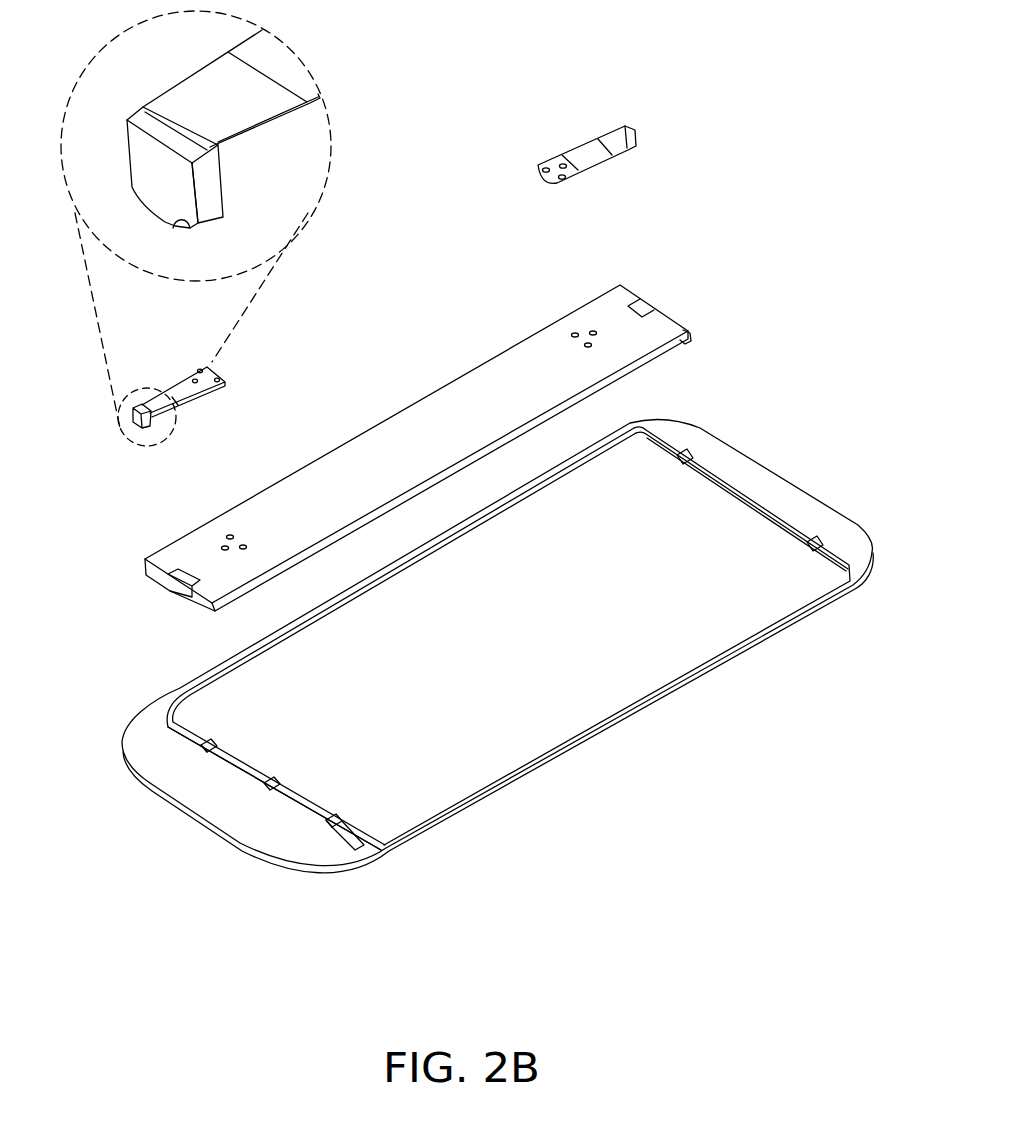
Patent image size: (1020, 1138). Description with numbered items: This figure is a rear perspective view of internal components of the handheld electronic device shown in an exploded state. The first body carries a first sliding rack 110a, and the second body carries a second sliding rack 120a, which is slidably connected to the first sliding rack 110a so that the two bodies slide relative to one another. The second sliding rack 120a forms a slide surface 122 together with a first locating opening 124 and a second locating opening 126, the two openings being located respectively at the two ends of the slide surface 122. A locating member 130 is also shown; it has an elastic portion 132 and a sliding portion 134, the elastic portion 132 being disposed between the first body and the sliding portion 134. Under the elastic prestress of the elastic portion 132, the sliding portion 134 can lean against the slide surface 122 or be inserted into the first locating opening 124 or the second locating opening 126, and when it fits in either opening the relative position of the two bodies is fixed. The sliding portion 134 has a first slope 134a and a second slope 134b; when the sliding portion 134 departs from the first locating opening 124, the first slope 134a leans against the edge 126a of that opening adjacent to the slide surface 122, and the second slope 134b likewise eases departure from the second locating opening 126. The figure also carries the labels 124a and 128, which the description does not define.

The first sliding rack 110a is at (408, 428).
The second sliding rack 120a is at (580, 722).
The slide surface 122 is at (250, 778).
The first locating opening 124 is at (206, 746).
The surface of first positioning protrusion 124a is at (206, 753).
The second locating opening 126 is at (337, 826).
The edge 126a is at (335, 830).
The third positioning protrusion 128 is at (274, 780).
The locating member 130 is at (132, 435).
The elastic portion 132 is at (177, 395).
The sliding portion 134 is at (133, 430).
The first slope 134a is at (143, 201).
The second slope 134b is at (186, 219).